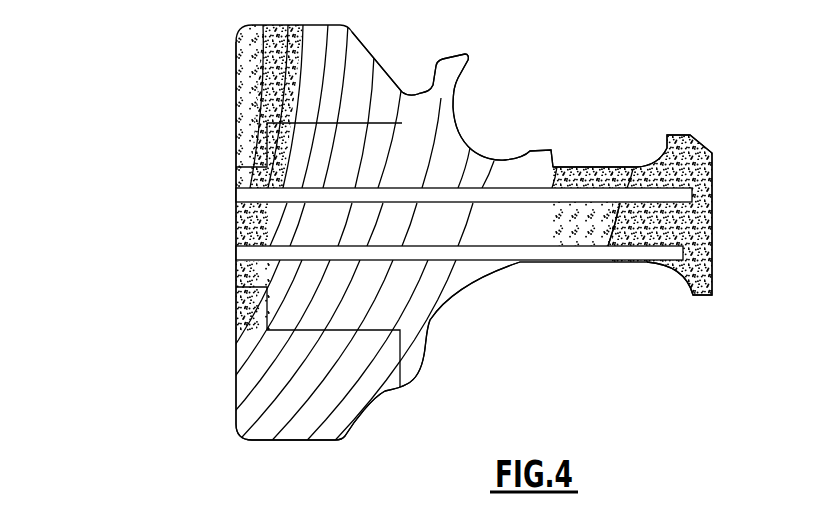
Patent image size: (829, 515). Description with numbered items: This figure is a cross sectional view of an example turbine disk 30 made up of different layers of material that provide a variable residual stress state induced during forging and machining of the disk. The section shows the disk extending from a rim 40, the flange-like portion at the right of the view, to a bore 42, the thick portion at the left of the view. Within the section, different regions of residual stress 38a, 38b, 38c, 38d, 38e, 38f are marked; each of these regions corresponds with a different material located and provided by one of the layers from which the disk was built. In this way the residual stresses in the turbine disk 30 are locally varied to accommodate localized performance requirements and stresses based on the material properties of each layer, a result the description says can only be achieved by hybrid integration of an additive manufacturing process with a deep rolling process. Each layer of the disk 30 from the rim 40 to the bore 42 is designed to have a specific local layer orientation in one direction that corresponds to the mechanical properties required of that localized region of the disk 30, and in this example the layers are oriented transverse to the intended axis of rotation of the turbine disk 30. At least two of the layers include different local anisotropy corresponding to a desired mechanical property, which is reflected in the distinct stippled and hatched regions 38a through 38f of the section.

The turbine disk 30 is at (110, 400).
The rim 40 is at (724, 195).
The bore 42 is at (230, 157).
The region of residual stress 38a is at (336, 414).
The region of residual stress 38b is at (413, 292).
The region of residual stress 38c is at (521, 249).
The region of residual stress 38d is at (610, 237).
The region of residual stress 38e is at (568, 194).
The region of residual stress 38f is at (476, 175).